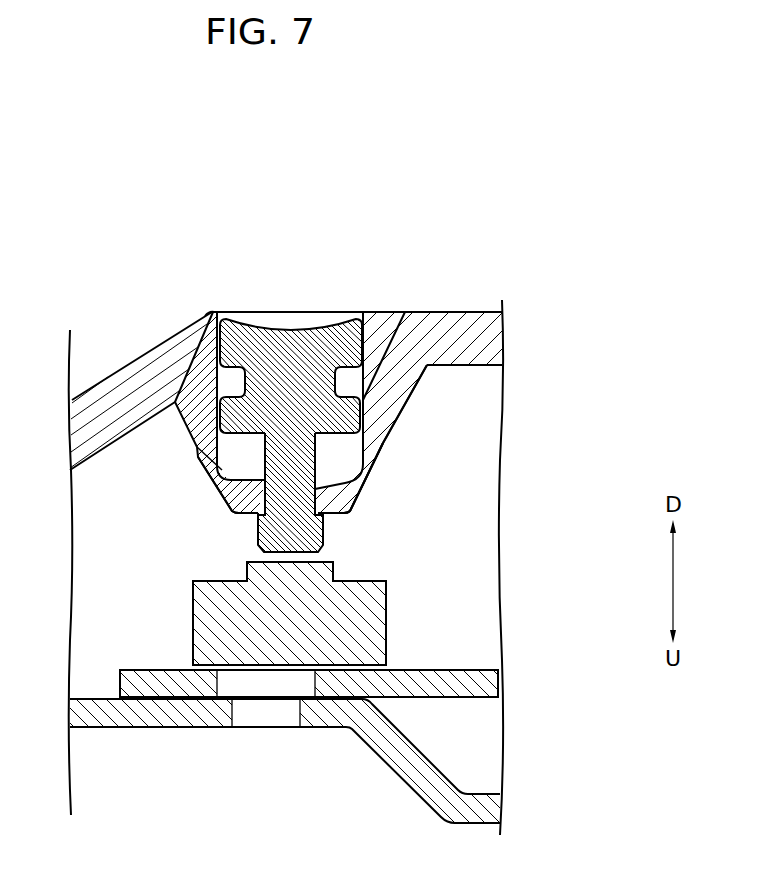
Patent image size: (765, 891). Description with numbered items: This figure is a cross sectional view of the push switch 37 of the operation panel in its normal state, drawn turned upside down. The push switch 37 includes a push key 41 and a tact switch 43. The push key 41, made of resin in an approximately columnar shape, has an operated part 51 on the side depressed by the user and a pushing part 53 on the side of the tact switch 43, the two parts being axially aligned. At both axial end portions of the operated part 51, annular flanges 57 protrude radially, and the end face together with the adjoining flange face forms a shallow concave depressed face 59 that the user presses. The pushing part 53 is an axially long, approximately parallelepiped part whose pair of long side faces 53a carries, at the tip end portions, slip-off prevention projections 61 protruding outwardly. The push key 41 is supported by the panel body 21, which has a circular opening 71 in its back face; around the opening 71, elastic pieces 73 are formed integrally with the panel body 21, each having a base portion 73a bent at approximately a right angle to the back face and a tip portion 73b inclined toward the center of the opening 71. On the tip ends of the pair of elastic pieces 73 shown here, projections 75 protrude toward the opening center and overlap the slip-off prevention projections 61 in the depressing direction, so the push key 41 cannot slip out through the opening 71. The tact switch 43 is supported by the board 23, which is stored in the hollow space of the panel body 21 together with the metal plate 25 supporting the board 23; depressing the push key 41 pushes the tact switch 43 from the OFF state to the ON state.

The panel body 21 is at (118, 378).
The board 23 is at (495, 682).
The metal plate 25 is at (495, 806).
The push switch 37 is at (304, 290).
The push key 41 is at (133, 480).
The tact switch 43 is at (190, 645).
The operated part 51 is at (216, 462).
The pushing part 53 is at (222, 495).
The long side face 53a is at (247, 512).
The annular flange 57 is at (407, 313).
The depressed face 59 is at (272, 326).
The slip-off prevention projection 61 is at (258, 537).
The opening 71 is at (210, 316).
The elastic piece 73 is at (203, 432).
The base portion 73a is at (388, 424).
The tip portion 73b is at (373, 480).
The projection 75 is at (240, 527).